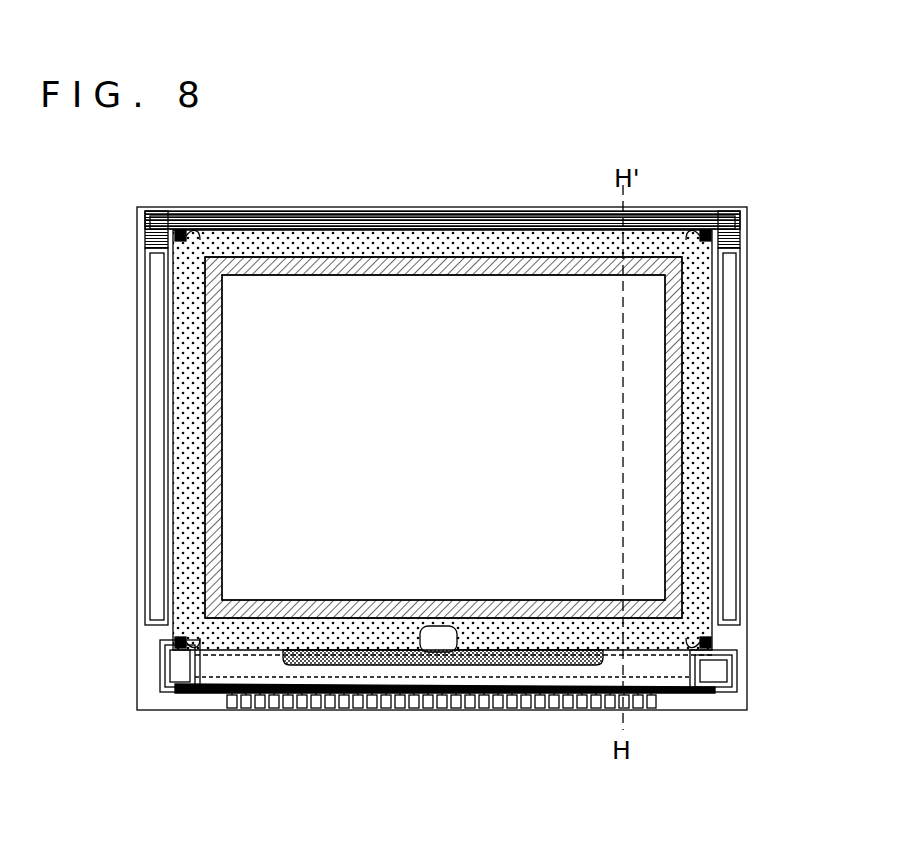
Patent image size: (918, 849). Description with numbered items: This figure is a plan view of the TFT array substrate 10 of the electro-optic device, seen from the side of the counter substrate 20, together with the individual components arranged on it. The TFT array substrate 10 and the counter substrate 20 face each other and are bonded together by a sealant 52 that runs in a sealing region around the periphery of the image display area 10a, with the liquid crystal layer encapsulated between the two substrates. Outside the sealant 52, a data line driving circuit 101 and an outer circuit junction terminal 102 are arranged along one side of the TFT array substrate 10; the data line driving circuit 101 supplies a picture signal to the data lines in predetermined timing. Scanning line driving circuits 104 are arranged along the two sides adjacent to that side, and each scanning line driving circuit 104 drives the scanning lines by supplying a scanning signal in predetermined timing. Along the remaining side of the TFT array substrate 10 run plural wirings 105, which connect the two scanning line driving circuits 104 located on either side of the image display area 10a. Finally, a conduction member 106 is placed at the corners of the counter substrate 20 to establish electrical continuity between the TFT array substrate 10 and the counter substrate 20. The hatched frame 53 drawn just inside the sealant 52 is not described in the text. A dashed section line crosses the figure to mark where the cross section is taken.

The TFT array substrate 10 is at (218, 208).
The image display area 10a is at (470, 441).
The counter substrate 20 is at (313, 232).
The sealant 52 is at (712, 372).
The light shielding frame 53 is at (220, 360).
The data line driving circuit 101 is at (205, 690).
The outer circuit junction terminal 102 is at (362, 709).
The scanning line driving circuit 104 is at (152, 435).
The wirings 105 is at (418, 211).
The conduction member 106 is at (178, 235).